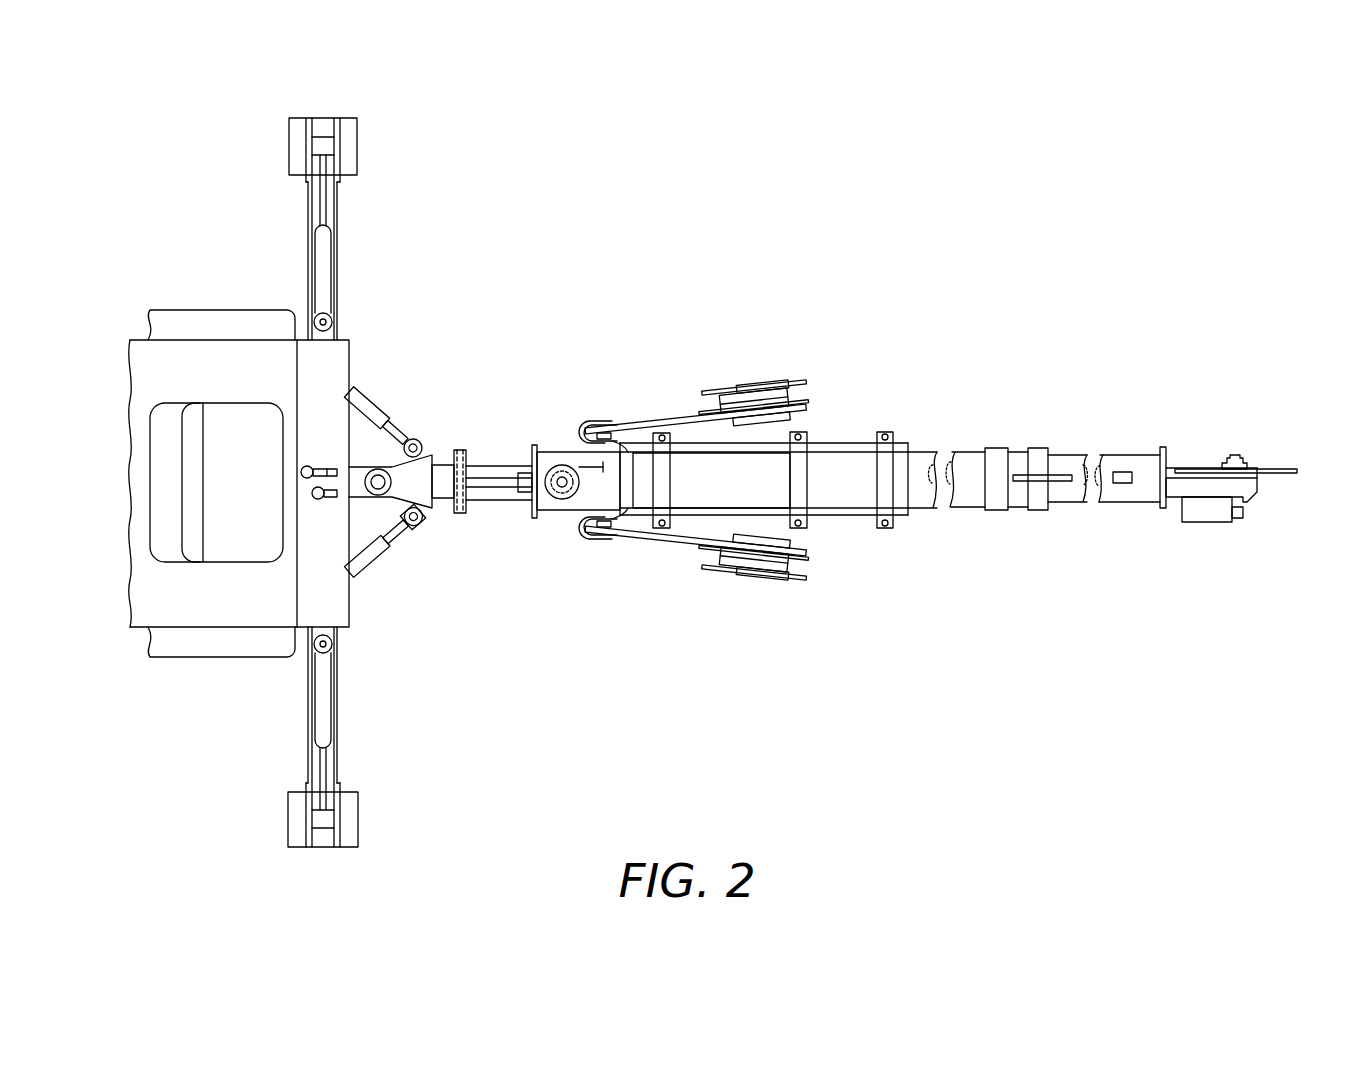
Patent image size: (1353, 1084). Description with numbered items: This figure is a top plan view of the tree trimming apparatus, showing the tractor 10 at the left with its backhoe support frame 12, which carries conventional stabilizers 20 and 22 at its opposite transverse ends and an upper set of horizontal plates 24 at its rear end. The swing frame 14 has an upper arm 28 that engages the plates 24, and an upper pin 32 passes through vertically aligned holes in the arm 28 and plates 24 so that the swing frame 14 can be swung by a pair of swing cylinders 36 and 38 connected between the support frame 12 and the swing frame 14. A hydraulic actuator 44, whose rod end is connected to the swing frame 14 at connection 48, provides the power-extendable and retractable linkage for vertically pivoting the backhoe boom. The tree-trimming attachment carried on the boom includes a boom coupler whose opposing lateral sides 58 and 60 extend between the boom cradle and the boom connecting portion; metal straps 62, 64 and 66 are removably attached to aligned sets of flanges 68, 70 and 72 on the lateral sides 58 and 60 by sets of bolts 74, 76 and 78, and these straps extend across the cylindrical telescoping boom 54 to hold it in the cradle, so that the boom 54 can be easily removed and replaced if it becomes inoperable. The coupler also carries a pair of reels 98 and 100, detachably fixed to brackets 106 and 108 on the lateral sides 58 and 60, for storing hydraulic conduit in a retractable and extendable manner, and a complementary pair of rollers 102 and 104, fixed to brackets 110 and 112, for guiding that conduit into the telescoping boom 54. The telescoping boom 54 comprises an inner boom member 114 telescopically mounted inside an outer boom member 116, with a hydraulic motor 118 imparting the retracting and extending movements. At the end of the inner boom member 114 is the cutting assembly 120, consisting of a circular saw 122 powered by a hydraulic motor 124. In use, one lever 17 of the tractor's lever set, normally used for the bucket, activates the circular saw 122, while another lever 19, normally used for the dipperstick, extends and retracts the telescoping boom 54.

The tractor 10 is at (213, 350).
The backhoe support frame 12 is at (350, 345).
The swing frame 14 is at (437, 458).
The lever 17 is at (320, 465).
The lever 19 is at (327, 500).
The stabilizer 20 is at (359, 822).
The stabilizer 22 is at (360, 143).
The upper set of horizontal plates 24 is at (395, 497).
The upper arm 28 is at (417, 522).
The upper pin 32 is at (383, 470).
The swing cylinder 36 is at (375, 555).
The swing cylinder 38 is at (365, 393).
The hydraulic actuator 44 is at (495, 487).
The rod end connection 48 is at (460, 450).
The telescoping boom 54 is at (1115, 505).
The lateral side 58 is at (858, 515).
The lateral side 60 is at (850, 445).
The metal strap 62 is at (915, 460).
The metal strap 64 is at (805, 450).
The metal strap 66 is at (670, 460).
The flanges 68 is at (893, 470).
The flanges 70 is at (800, 410).
The flanges 72 is at (655, 445).
The bolts 74 is at (886, 432).
The bolts 76 is at (800, 432).
The bolts 78 is at (663, 434).
The reel 98 is at (712, 548).
The reel 100 is at (722, 405).
The roller 102 is at (590, 535).
The roller 104 is at (593, 423).
The bracket 106 is at (750, 557).
The bracket 108 is at (750, 403).
The bracket 110 is at (613, 522).
The bracket 112 is at (622, 428).
The inner boom member 114 is at (1100, 458).
The outer boom member 116 is at (963, 455).
The hydraulic motor 118 is at (555, 470).
The cutting assembly 120 is at (1221, 420).
The circular saw 122 is at (1267, 468).
The hydraulic motor 124 is at (1203, 510).